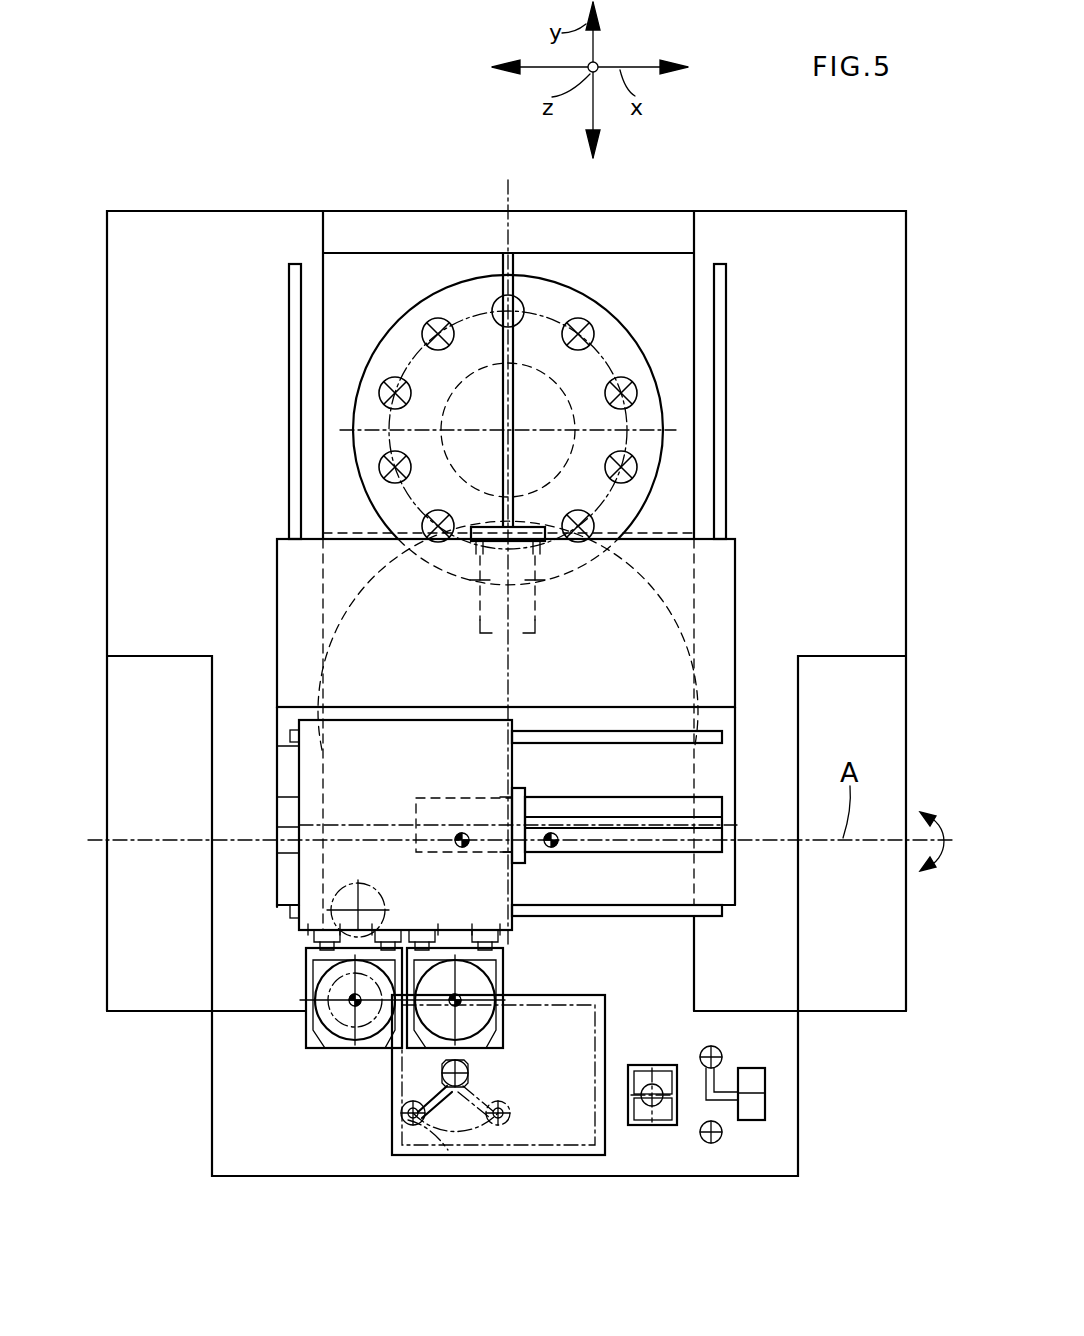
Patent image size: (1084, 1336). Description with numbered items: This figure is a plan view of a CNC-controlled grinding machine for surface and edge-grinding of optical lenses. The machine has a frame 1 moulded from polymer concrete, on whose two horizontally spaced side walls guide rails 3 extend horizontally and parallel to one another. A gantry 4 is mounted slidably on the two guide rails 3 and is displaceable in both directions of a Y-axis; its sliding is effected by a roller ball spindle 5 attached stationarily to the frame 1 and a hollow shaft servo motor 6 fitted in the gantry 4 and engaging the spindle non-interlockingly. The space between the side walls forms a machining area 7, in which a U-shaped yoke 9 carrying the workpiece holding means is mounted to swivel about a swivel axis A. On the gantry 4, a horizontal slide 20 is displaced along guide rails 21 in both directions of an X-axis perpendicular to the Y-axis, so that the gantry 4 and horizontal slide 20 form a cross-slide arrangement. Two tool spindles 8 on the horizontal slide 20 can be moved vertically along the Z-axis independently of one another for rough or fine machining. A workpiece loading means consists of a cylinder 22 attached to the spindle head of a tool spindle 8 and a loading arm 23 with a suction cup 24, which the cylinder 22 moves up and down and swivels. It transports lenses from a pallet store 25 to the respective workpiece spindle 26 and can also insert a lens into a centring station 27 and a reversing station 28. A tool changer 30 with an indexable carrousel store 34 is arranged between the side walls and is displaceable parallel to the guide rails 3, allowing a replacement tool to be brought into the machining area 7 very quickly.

The frame 1 is at (165, 232).
The guide rails 3 is at (292, 300).
The gantry 4 is at (297, 592).
The roller ball spindle 5 is at (503, 268).
The hollow shaft servo motor 6 is at (497, 612).
The machining area 7 is at (672, 648).
The tool spindles 8 is at (346, 1010).
The yoke 9 is at (630, 862).
The horizontal slide 20 is at (392, 768).
The guide rails 21 is at (588, 743).
The cylinder 22 is at (442, 1064).
The loading arm 23 is at (452, 1128).
The suction cup 24 is at (413, 1125).
The pallet store 25 is at (518, 1155).
The workpiece spindle 26 is at (462, 848).
The centring station 27 is at (661, 1125).
The reversing station 28 is at (772, 1080).
The tool changer 30 is at (668, 382).
The carrousel store 34 is at (610, 338).